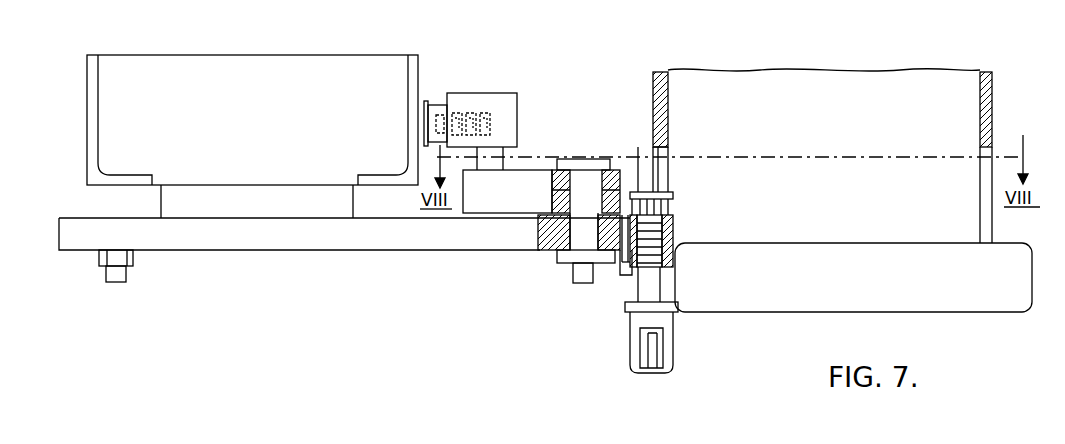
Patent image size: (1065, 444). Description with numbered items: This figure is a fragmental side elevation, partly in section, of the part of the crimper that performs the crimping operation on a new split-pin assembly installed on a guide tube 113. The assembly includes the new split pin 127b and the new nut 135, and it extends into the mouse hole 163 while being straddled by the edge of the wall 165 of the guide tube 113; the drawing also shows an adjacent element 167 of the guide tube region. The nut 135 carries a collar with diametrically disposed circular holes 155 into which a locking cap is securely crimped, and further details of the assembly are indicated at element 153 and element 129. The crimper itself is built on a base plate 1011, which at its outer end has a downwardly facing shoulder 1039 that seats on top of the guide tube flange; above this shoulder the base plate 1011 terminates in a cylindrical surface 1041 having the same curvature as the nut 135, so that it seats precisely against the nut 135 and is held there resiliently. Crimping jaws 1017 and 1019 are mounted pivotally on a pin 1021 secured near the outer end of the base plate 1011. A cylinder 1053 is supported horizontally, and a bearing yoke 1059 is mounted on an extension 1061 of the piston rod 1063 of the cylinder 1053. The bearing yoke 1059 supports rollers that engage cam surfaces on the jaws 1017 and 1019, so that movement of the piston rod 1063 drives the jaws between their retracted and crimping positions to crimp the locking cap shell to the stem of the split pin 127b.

The cylinder 1053 is at (256, 66).
The base plate 1011 is at (253, 240).
The piston rod 1063 is at (430, 104).
The bearing yoke 1059 is at (504, 100).
The extension of the piston rod 1061 is at (497, 87).
The crimping jaw 1017 is at (558, 167).
The crimping jaw 1019 is at (542, 220).
The pin 1021 is at (581, 272).
The wall 165 is at (655, 82).
The mouse hole 163 is at (656, 152).
The flange 167 is at (630, 175).
The guide tube 113 is at (1052, 110).
The split pin 127b is at (668, 193).
The cylindrical surface 1041 is at (660, 216).
The circular holes 155 is at (674, 250).
The shaft 153 is at (660, 289).
The coupling 129 is at (668, 326).
The nut 135 is at (633, 264).
The shoulder 1039 is at (626, 274).